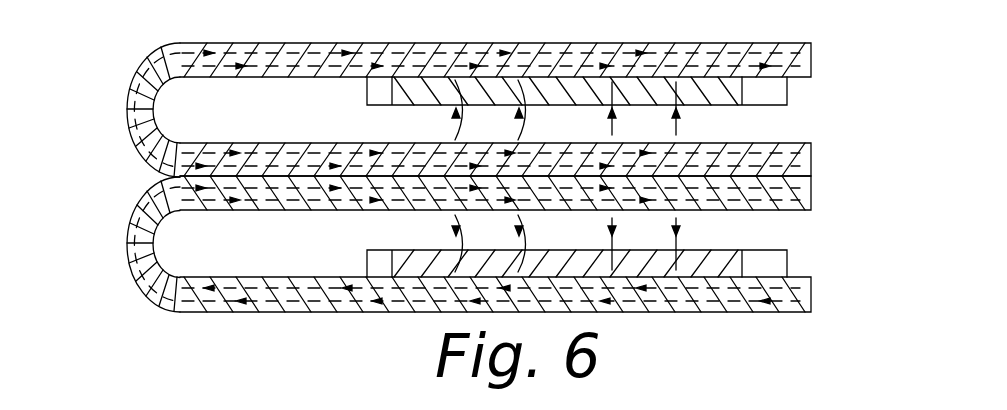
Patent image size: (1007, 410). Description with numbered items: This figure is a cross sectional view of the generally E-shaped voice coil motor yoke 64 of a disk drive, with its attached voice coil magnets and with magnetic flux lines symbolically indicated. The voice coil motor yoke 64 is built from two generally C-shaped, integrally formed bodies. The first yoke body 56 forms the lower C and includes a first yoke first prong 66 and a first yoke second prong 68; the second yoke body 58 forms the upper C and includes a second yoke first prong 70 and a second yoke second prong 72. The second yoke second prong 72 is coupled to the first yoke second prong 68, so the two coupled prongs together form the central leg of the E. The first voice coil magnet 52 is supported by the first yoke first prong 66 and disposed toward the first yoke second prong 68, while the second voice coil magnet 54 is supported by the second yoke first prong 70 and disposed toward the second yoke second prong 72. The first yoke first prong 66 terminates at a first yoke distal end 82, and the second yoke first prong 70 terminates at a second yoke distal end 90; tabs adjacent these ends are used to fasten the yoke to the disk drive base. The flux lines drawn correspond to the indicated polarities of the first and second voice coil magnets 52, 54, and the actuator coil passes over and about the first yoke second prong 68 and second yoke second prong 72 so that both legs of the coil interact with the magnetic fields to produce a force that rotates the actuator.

The first voice coil magnet 52 is at (726, 268).
The second voice coil magnet 54 is at (710, 90).
The first yoke body 56 is at (142, 202).
The second yoke body 58 is at (138, 147).
The voice coil motor yoke 64 is at (75, 133).
The first yoke first prong 66 is at (260, 312).
The first yoke second prong 68 is at (302, 210).
The second yoke first prong 70 is at (239, 45).
The second yoke second prong 72 is at (302, 153).
The first yoke distal end 82 is at (785, 305).
The second yoke distal end 90 is at (781, 47).